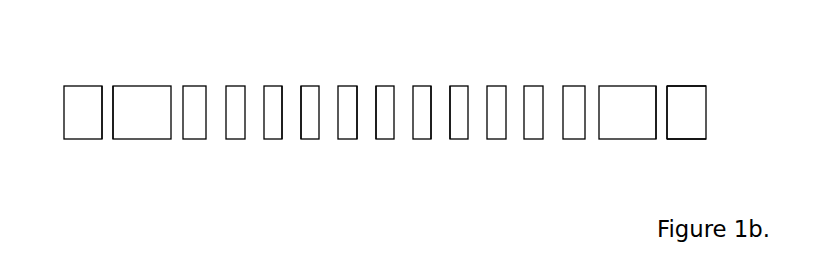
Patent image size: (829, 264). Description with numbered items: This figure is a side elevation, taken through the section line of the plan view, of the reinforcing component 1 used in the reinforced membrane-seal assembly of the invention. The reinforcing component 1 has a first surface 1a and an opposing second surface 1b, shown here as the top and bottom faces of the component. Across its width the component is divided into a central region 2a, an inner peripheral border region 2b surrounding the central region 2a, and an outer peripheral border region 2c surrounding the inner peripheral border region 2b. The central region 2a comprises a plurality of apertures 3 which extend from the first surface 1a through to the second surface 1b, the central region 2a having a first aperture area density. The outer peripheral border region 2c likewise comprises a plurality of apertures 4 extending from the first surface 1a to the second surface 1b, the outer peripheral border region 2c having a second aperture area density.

The reinforcing component 1 is at (738, 110).
The first surface 1a is at (708, 60).
The second surface 1b is at (713, 156).
The central region 2a is at (555, 146).
The inner peripheral border region 2b is at (213, 146).
The outer peripheral border region 2c is at (182, 146).
The apertures 3 is at (418, 77).
The apertures 4 is at (90, 60).